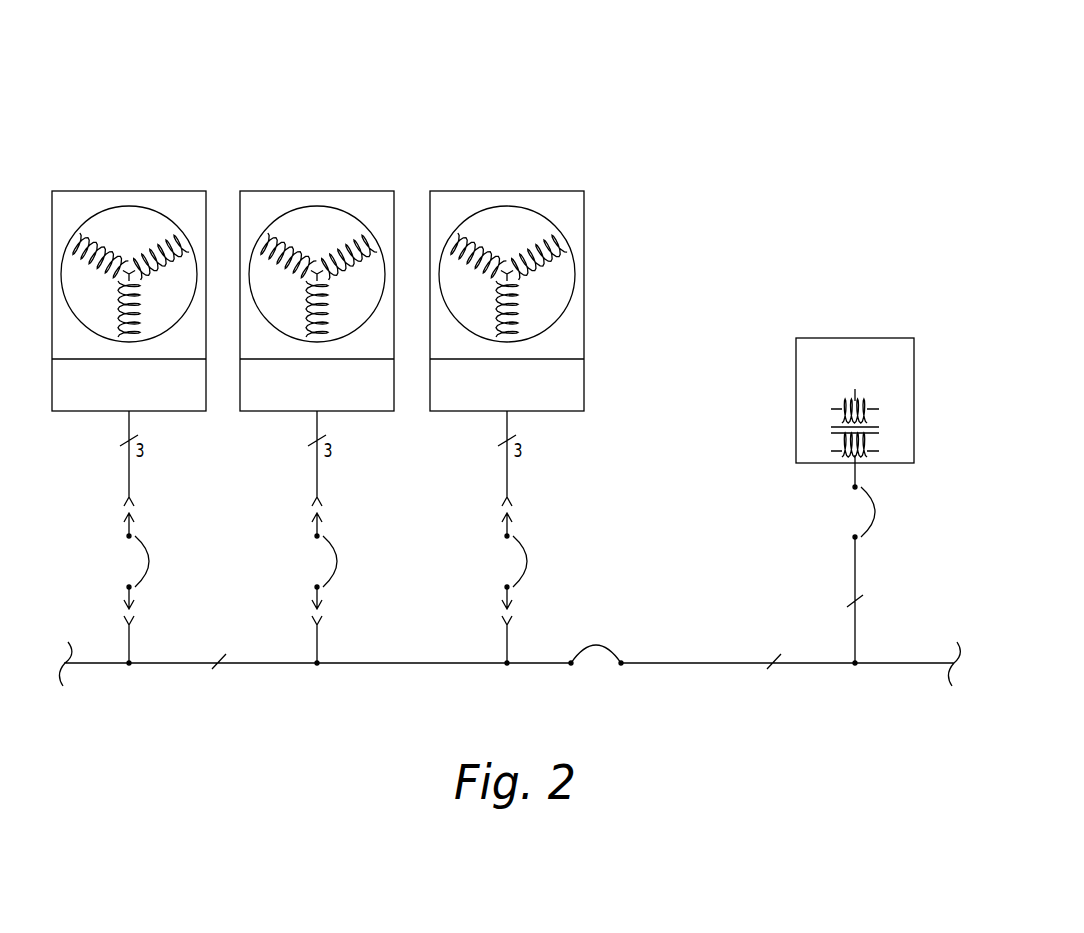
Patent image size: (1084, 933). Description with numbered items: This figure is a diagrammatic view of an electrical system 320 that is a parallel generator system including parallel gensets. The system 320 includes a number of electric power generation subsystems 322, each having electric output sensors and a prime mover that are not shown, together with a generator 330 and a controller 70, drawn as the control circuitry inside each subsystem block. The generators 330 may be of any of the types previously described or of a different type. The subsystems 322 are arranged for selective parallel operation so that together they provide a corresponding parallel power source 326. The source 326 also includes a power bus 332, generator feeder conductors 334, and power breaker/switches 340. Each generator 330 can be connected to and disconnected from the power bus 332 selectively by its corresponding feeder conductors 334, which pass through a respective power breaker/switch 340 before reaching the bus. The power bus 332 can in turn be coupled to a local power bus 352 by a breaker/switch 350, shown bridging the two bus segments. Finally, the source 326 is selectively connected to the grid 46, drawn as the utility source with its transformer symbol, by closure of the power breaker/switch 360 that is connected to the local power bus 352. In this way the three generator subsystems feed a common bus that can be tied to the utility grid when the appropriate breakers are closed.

The electrical system 320 is at (857, 248).
The parallel power source 326 is at (340, 102).
The electric power generation subsystem 322 is at (164, 188).
The generator 330 is at (86, 188).
The controller 70 is at (66, 412).
The generator feeder conductors 334 is at (130, 480).
The power breaker/switch 340 is at (160, 566).
The power bus 332 is at (393, 666).
The breaker/switch 350 is at (605, 646).
The local power bus 352 is at (825, 666).
The grid 46 is at (797, 372).
The power breaker/switch 360 is at (884, 517).